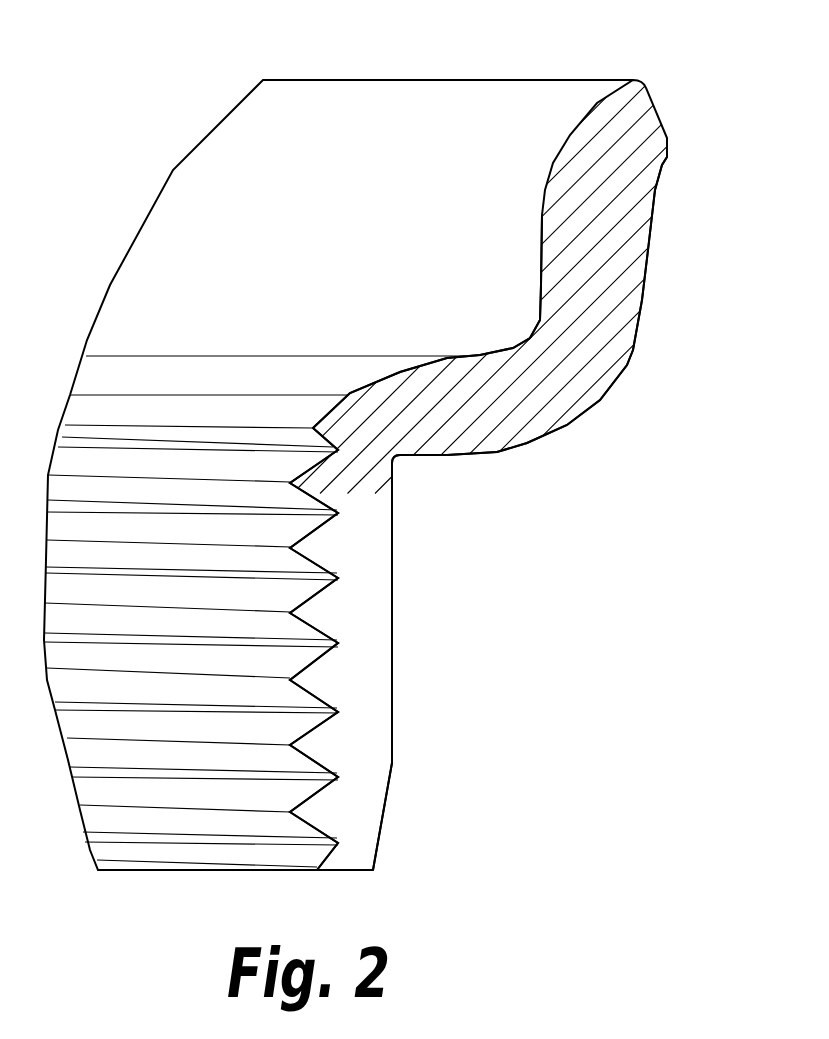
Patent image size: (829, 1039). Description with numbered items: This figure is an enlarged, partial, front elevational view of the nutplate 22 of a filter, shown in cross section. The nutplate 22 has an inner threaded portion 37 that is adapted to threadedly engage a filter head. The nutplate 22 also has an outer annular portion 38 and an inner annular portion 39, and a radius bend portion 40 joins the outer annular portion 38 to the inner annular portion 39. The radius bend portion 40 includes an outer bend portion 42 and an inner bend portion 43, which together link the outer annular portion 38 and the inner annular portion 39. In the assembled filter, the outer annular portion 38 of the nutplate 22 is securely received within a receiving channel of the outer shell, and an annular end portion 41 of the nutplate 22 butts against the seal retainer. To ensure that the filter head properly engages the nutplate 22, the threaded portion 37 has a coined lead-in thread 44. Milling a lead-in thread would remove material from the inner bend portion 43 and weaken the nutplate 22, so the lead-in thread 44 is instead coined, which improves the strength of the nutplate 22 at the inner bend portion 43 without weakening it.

The nutplate 22 is at (585, 137).
The inner threaded portion 37 is at (325, 449).
The outer annular portion 38 is at (633, 207).
The inner annular portion 39 is at (363, 517).
The radius bend portion 40 is at (487, 418).
The annular end portion 41 is at (347, 871).
The outer bend portion 42 is at (583, 390).
The inner bend portion 43 is at (403, 457).
The coined lead-in thread 44 is at (333, 415).